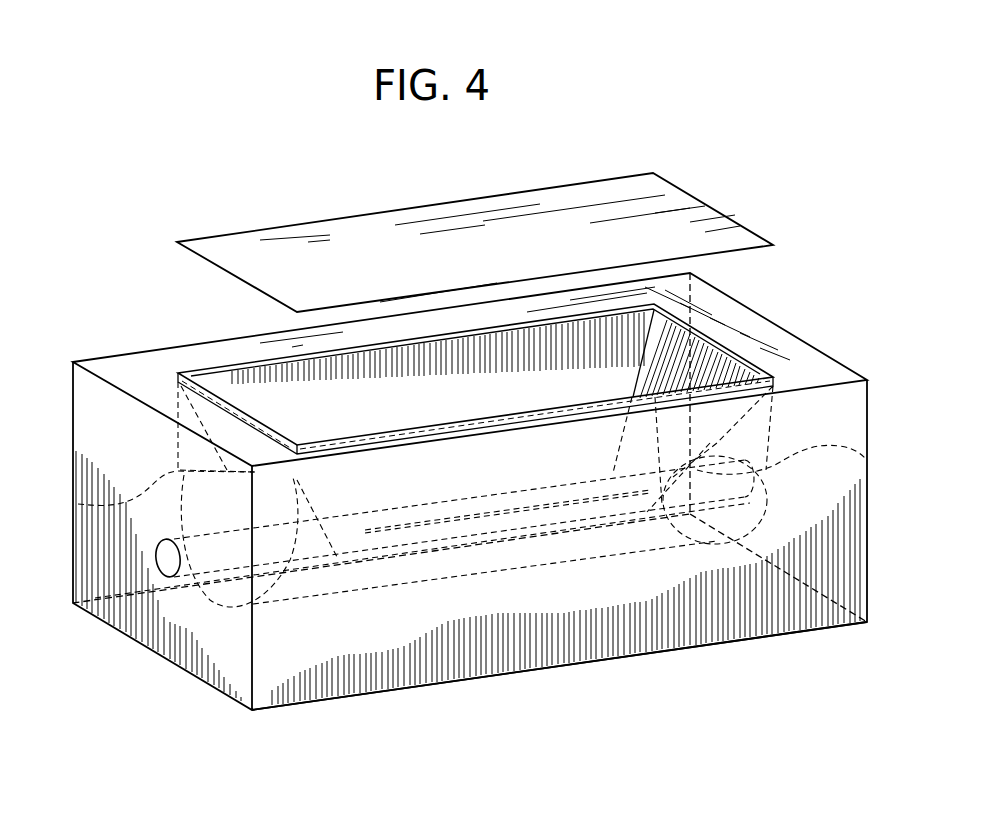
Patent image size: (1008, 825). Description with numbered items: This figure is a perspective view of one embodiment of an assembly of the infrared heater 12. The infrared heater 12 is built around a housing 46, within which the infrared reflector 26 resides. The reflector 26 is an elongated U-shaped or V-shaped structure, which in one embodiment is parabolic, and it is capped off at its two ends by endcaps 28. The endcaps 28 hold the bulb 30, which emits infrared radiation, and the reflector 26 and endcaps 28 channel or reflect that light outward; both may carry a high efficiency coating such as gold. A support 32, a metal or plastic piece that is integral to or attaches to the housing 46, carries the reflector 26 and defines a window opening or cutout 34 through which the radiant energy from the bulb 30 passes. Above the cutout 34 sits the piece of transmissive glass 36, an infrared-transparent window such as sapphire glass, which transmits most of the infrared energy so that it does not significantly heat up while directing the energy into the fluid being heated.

The infrared heater 12 is at (828, 301).
The reflector 26 is at (803, 545).
The endcaps 28 is at (866, 459).
The bulb 30 is at (163, 578).
The support 32 is at (817, 373).
The cutout 34 is at (700, 332).
The transmissive glass 36 is at (654, 173).
The housing 46 is at (768, 637).